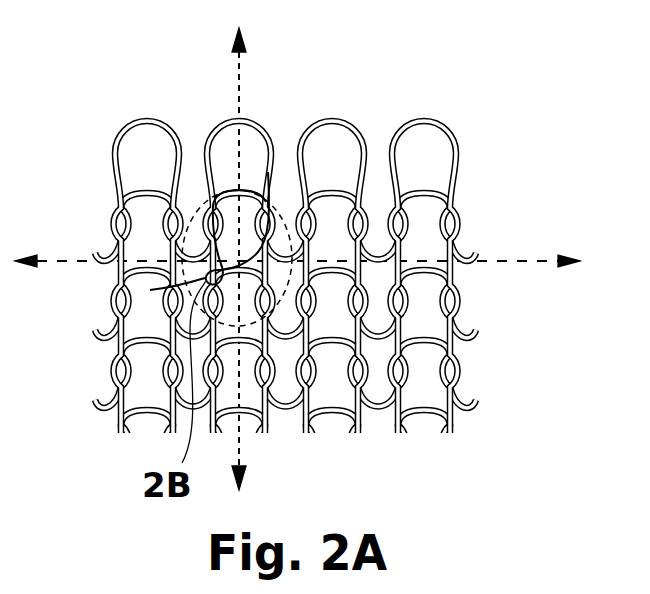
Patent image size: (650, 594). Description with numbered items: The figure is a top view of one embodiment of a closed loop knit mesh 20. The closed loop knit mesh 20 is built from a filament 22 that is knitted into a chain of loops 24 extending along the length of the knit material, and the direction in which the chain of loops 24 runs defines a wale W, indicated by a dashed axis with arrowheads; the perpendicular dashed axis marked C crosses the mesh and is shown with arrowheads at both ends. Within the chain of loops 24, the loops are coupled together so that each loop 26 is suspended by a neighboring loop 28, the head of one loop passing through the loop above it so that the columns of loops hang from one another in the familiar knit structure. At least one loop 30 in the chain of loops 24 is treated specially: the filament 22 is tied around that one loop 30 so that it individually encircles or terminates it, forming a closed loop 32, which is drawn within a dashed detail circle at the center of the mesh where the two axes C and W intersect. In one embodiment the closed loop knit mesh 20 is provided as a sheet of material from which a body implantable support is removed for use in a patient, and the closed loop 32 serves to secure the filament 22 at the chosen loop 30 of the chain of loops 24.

The closed loop knit mesh 20 is at (284, 254).
The filament 22 is at (110, 158).
The chain of loops 24 is at (220, 121).
The loop 26 is at (277, 133).
The neighboring loop 28 is at (262, 190).
The loop 30 is at (283, 240).
The closed loop 32 is at (150, 290).
The course direction C is at (245, 66).
The wale W is at (514, 260).